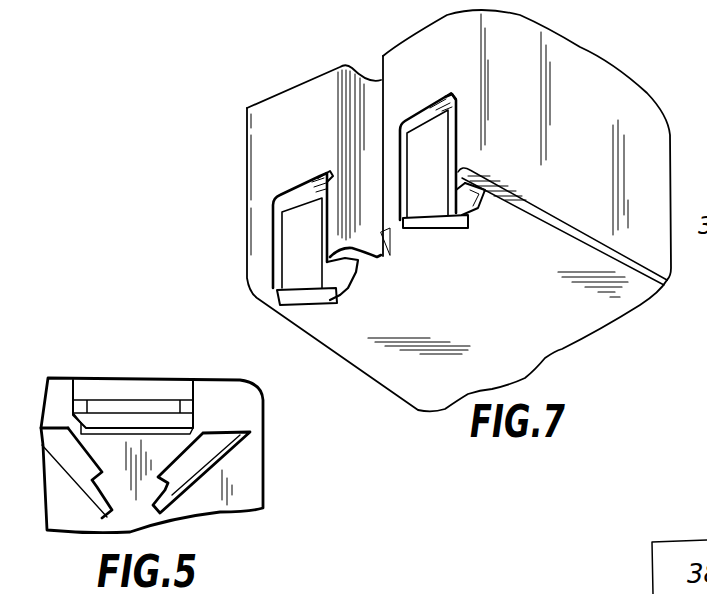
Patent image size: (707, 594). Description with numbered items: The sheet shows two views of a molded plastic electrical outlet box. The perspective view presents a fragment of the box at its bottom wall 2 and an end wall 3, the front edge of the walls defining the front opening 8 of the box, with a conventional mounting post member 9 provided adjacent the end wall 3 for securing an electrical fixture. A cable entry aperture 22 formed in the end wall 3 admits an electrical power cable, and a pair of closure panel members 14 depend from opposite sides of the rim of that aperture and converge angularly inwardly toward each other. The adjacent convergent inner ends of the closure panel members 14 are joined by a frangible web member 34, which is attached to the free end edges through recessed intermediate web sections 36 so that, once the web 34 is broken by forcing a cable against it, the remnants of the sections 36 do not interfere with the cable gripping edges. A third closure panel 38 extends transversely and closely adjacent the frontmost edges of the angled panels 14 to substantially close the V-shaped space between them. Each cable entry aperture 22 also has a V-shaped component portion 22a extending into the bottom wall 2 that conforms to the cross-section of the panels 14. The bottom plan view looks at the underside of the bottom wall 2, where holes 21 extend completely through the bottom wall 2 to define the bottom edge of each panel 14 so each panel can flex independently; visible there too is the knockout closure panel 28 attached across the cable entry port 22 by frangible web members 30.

In FIG. 7, the bottom wall 2 is at (515, 333).
In FIG. 5, the bottom wall 2 is at (250, 458).
In FIG. 7, the end wall 3 is at (276, 108).
In FIG. 7, the front opening 8 is at (389, 200).
In FIG. 7, the mounting post member 9 is at (430, 73).
In FIG. 7, the closure panel member 14 is at (291, 289).
In FIG. 5, the closure panel member 14 is at (70, 463).
In FIG. 5, the hole 21 is at (75, 500).
In FIG. 7, the cable entry aperture 22 is at (275, 215).
In FIG. 5, the cable entry aperture 22 is at (182, 387).
In FIG. 7, the aperture component portion 22a is at (455, 230).
In FIG. 5, the knockout closure panel 28 is at (102, 418).
In FIG. 5, the frangible web member 30 is at (130, 430).
In FIG. 7, the frangible web member 34 is at (352, 283).
In FIG. 7, the intermediate web section 36 is at (318, 296).
In FIG. 7, the third closure panel 38 is at (301, 192).